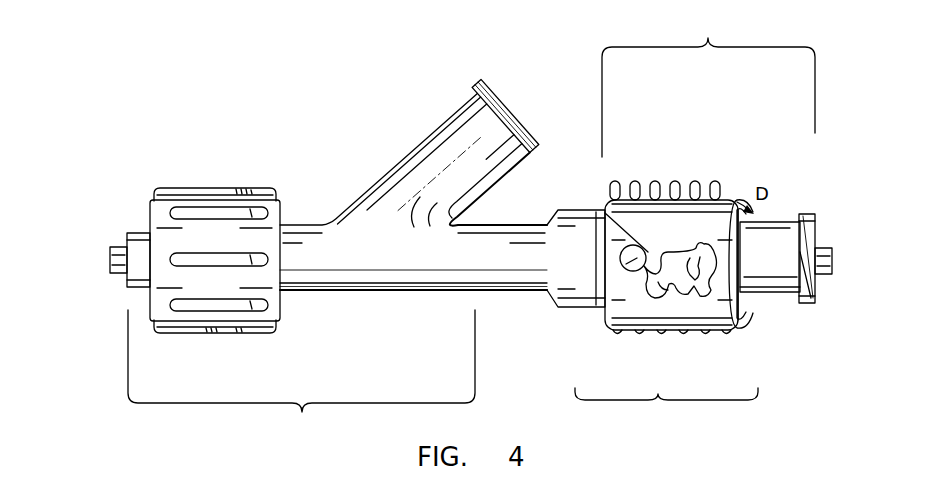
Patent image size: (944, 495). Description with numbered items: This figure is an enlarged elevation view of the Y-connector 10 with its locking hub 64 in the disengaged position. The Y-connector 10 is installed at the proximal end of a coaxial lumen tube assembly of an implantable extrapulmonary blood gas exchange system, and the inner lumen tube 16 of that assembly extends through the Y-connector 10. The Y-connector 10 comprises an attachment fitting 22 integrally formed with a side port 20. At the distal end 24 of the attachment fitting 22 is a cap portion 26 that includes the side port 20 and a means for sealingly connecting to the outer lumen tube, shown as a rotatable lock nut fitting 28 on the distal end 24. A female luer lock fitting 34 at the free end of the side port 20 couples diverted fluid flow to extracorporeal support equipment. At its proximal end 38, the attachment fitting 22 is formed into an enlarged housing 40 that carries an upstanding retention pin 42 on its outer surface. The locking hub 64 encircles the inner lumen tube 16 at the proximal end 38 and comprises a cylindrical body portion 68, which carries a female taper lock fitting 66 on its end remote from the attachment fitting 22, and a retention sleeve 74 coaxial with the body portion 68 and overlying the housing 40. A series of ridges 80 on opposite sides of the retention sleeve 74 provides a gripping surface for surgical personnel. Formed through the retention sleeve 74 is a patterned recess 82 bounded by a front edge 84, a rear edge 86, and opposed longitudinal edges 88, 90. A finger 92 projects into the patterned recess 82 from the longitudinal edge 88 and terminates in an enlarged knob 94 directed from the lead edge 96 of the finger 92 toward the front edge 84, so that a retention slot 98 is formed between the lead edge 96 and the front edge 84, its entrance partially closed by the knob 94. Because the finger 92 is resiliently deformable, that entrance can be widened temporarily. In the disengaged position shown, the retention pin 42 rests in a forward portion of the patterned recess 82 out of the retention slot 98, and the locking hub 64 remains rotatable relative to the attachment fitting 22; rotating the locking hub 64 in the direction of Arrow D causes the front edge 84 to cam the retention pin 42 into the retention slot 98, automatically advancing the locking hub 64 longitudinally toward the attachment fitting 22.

The Y-connector 10 is at (372, 52).
The inner lumen tube 16 is at (108, 258).
The side port 20 is at (447, 155).
The attachment fitting 22 is at (412, 247).
The distal end 24 is at (300, 288).
The cap portion 26 is at (301, 375).
The rotatable lock nut fitting 28 is at (212, 228).
The female luer lock fitting 34 is at (495, 78).
The proximal end 38 is at (522, 292).
The enlarged housing 40 is at (585, 240).
The retention pin 42 is at (600, 312).
The locking hub 64 is at (708, 87).
The female taper lock fitting 66 is at (813, 214).
The cylindrical body portion 68 is at (783, 245).
The retention sleeve 74 is at (737, 203).
The ridges 80 is at (697, 256).
The patterned recess 82 is at (666, 315).
The front edge 84 is at (633, 270).
The rear edge 86 is at (710, 290).
The longitudinal edge 88 is at (656, 294).
The longitudinal edge 90 is at (740, 328).
The finger 92 is at (684, 260).
The enlarged knob 94 is at (666, 282).
The lead edge 96 is at (666, 312).
The retention slot 98 is at (654, 266).